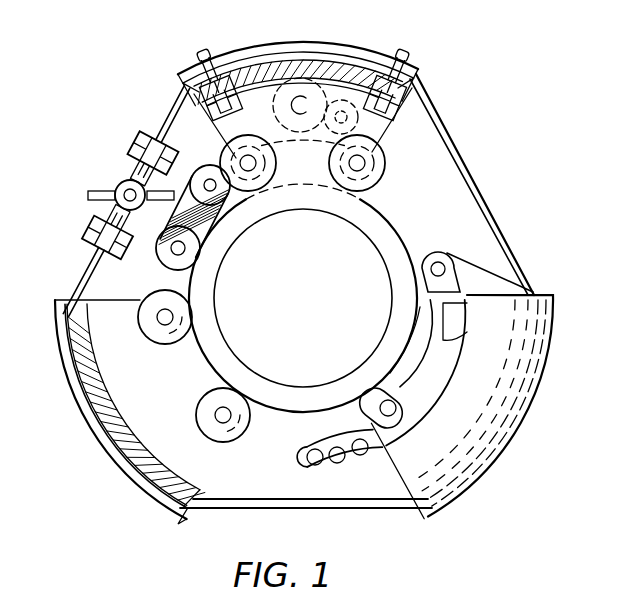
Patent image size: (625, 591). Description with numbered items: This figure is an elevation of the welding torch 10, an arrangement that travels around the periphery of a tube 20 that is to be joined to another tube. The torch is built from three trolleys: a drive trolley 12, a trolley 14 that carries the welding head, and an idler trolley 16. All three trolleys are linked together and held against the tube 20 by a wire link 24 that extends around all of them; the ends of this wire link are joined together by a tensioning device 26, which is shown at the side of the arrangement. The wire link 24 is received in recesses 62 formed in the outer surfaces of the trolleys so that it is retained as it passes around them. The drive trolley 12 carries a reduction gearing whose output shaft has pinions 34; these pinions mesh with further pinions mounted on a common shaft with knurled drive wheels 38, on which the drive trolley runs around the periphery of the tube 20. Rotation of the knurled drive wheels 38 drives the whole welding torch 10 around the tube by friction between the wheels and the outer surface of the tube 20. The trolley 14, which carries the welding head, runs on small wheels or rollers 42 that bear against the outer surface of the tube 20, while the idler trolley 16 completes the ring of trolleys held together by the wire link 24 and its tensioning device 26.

The welding torch 10 is at (117, 148).
The drive trolley 12 is at (263, 43).
The trolley 14 is at (453, 433).
The idler trolley 16 is at (142, 385).
The tube 20 is at (265, 397).
The wire link 24 is at (374, 503).
The tensioning device 26 is at (113, 187).
The pinions 34 is at (365, 127).
The knurled drive wheels 38 is at (247, 172).
The rollers 42 is at (387, 387).
The recesses 62 is at (147, 487).